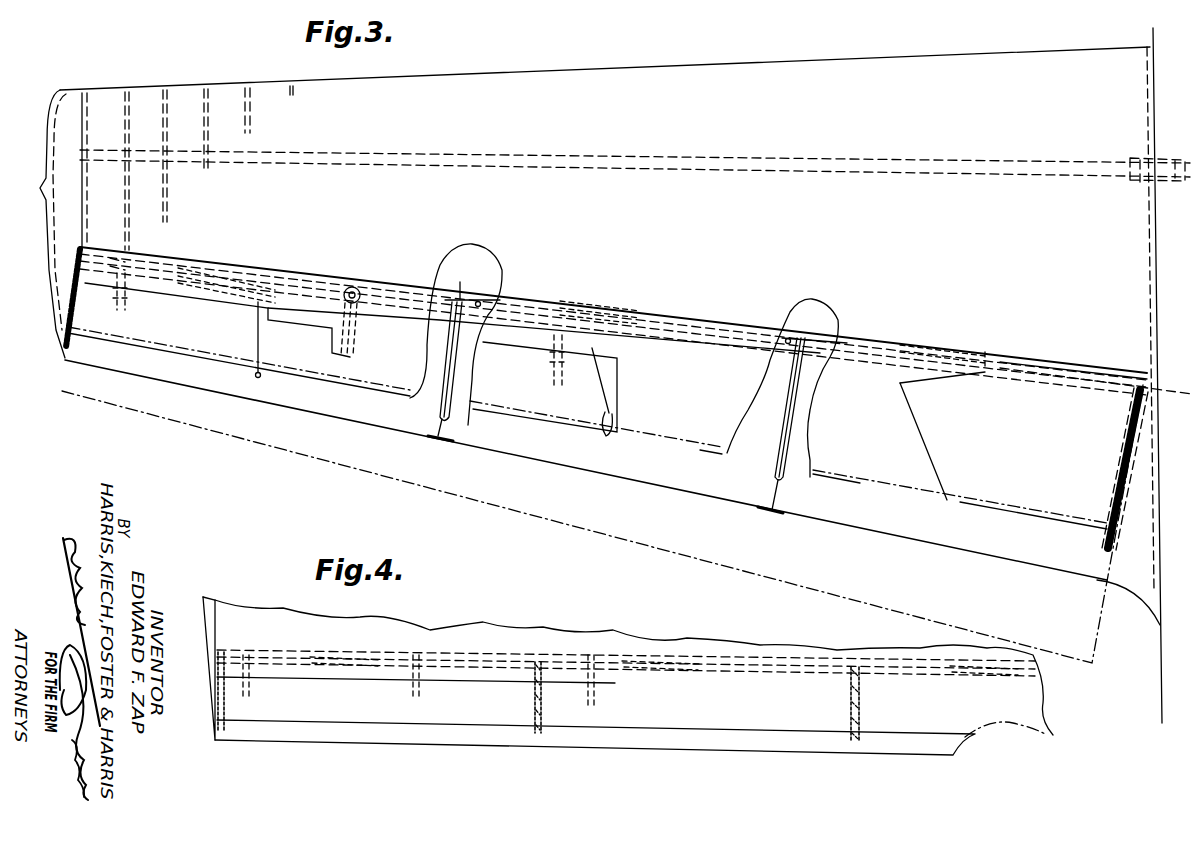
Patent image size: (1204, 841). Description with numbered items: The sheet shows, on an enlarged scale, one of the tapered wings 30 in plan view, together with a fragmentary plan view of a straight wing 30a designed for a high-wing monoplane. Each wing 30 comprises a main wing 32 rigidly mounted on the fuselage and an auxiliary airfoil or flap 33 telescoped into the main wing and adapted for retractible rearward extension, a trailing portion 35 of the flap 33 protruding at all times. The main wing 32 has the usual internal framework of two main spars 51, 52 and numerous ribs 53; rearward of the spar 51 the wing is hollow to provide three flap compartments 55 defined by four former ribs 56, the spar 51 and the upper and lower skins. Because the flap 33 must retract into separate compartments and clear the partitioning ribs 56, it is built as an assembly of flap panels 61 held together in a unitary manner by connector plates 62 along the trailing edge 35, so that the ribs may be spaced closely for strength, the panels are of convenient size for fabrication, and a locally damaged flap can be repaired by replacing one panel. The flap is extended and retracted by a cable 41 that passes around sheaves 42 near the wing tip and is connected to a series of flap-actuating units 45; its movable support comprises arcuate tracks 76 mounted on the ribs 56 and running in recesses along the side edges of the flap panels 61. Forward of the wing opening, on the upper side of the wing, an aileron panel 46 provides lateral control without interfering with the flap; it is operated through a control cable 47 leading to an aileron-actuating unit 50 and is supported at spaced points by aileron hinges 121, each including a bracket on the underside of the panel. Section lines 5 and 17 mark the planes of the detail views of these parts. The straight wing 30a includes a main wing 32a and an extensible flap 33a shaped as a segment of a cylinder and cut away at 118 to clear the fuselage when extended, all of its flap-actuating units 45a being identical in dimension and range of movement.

In FIG. 3, the tapered wing 30 is at (746, 56).
In FIG. 3, the main wing 32 is at (554, 90).
In FIG. 3, the ribs 53 is at (165, 112).
In FIG. 3, the main spar 52 is at (1062, 166).
In FIG. 3, the cable 41 is at (1028, 352).
In FIG. 3, the main spar 51 is at (1097, 368).
In FIG. 3, the flap compartments 55 is at (205, 290).
In FIG. 3, the sheaves 42 is at (155, 255).
In FIG. 3, the flap-actuating units 45 is at (260, 268).
In FIG. 3, the former ribs 56 is at (112, 246).
In FIG. 3, the flap panels 61 is at (258, 378).
In FIG. 3, the trailing portion 35 is at (882, 515).
In FIG. 3, the flap 33 is at (687, 484).
In FIG. 3, the arcuate tracks 76 is at (1113, 455).
In FIG. 3, the section line 17 is at (360, 281).
In FIG. 3, the aileron panel 46 is at (606, 436).
In FIG. 3, the control cable 47 is at (985, 385).
In FIG. 3, the aileron-actuating unit 50 is at (375, 318).
In FIG. 3, the connector plates 62 is at (427, 441).
In FIG. 3, the section line 5 is at (477, 284).
In FIG. 3, the aileron hinge 121 is at (128, 302).
In FIG. 4, the straight wing 30a is at (726, 628).
In FIG. 4, the main wing 32a is at (580, 640).
In FIG. 4, the extensible flap 33a is at (788, 748).
In FIG. 4, the cut-away 118 is at (965, 743).
In FIG. 4, the flap-actuating units 45a is at (350, 680).